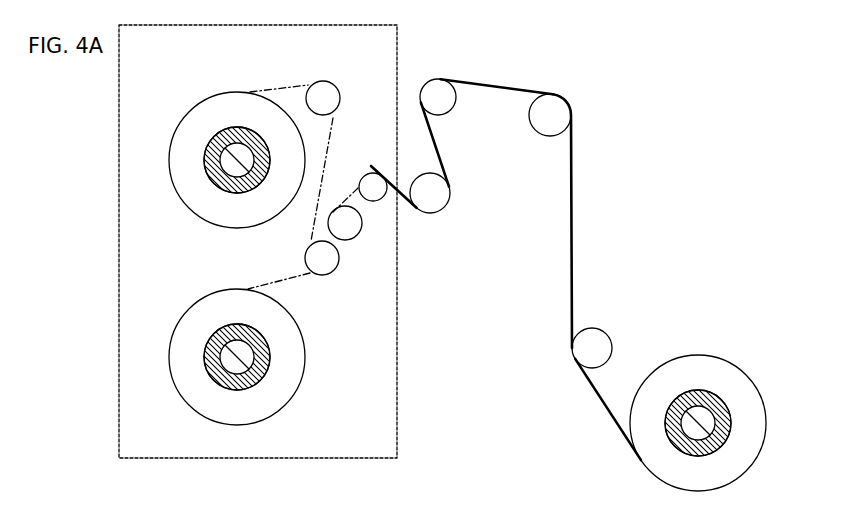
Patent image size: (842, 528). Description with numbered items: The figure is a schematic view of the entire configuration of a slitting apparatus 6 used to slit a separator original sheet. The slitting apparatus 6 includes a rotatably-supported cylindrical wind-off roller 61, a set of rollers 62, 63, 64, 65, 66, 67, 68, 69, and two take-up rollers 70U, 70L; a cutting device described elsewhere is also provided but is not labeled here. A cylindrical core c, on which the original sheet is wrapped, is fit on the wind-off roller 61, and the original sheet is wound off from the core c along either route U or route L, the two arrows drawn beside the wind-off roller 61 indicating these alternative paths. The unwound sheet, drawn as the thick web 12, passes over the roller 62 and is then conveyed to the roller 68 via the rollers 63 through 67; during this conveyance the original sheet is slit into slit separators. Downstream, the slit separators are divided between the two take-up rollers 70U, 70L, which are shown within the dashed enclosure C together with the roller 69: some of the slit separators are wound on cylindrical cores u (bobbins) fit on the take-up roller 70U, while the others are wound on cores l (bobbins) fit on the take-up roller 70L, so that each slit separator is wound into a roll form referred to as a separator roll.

The slitting apparatus 6 is at (737, 73).
The transfer web 12 is at (573, 210).
The wind-off roller 61 is at (675, 447).
The roller 62 is at (597, 330).
The roller 63 is at (571, 110).
The roller 64 is at (434, 85).
The roller 65 is at (451, 193).
The roller 66 is at (375, 178).
The roller 67 is at (352, 232).
The roller 68 is at (328, 268).
The roller 69 is at (330, 82).
The take-up roller 70U is at (213, 178).
The take-up roller 70L is at (213, 376).
The take-up cassette C is at (399, 408).
The core c is at (727, 441).
The core u is at (203, 153).
The core l is at (203, 350).
The route U is at (618, 367).
The route L is at (601, 394).